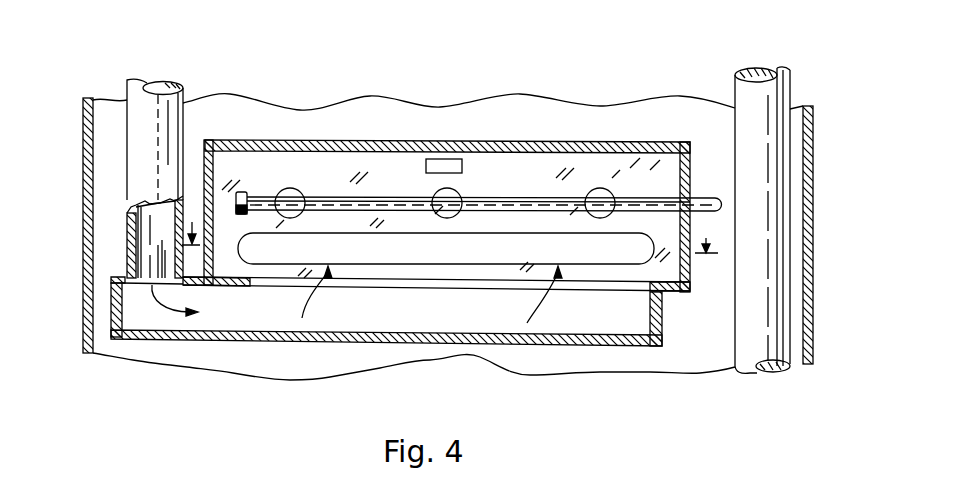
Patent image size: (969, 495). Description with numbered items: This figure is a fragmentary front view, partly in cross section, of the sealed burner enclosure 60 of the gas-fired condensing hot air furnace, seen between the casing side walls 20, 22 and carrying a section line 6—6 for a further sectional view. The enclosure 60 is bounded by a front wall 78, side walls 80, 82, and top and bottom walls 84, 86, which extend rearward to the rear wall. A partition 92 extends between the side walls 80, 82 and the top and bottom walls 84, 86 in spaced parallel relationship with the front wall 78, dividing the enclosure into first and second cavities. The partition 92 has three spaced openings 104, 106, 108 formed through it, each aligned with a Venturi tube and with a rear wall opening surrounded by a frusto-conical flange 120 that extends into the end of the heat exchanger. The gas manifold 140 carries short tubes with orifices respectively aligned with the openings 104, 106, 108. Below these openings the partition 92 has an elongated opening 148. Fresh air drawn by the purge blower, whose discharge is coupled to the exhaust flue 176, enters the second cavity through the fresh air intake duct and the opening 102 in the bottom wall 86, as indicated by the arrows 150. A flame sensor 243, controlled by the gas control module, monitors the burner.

The section line 6— 6 is at (450, 225).
The side wall 20 is at (807, 197).
The side wall 22 is at (82, 146).
The sealed burner enclosure 60 is at (437, 181).
The front wall 78 is at (165, 107).
The side wall 80 is at (690, 201).
The side wall 82 is at (208, 165).
The top wall 84 is at (587, 148).
The bottom wall 86 is at (667, 297).
The partition 92 is at (643, 173).
The opening 102 is at (242, 285).
The opening 104 is at (288, 190).
The opening 106 is at (440, 188).
The opening 108 is at (598, 191).
The frusto-conical flange 120 is at (258, 340).
The gas manifold 140 is at (492, 205).
The elongated opening 148 is at (437, 248).
The arrows 150 is at (149, 62).
The exhaust flue 176 is at (783, 95).
The flame sensor 243 is at (442, 154).